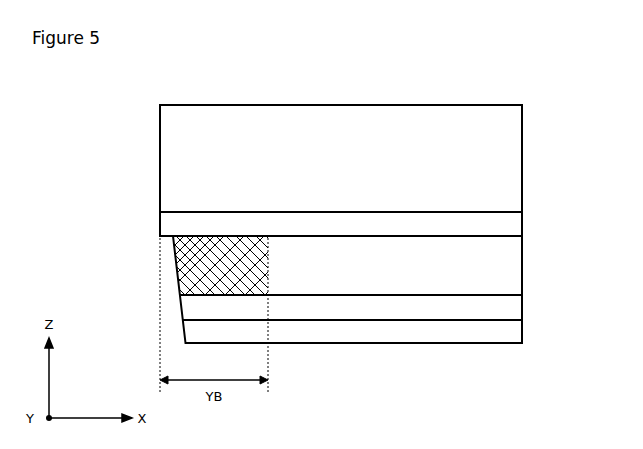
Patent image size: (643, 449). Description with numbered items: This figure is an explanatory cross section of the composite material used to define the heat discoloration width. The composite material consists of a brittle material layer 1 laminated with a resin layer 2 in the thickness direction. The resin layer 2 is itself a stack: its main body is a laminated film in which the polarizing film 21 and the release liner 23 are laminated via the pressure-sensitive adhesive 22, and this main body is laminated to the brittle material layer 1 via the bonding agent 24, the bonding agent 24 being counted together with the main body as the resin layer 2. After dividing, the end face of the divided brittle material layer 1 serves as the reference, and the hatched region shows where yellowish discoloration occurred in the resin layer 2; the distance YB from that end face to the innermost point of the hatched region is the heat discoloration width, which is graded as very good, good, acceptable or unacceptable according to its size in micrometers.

The brittle material layer 1 is at (510, 150).
The resin layer 2 is at (588, 210).
The polarizing film 21 is at (503, 262).
The pressure-sensitive adhesive 22 is at (503, 303).
The release liner 23 is at (503, 328).
The bonding agent 24 is at (503, 220).